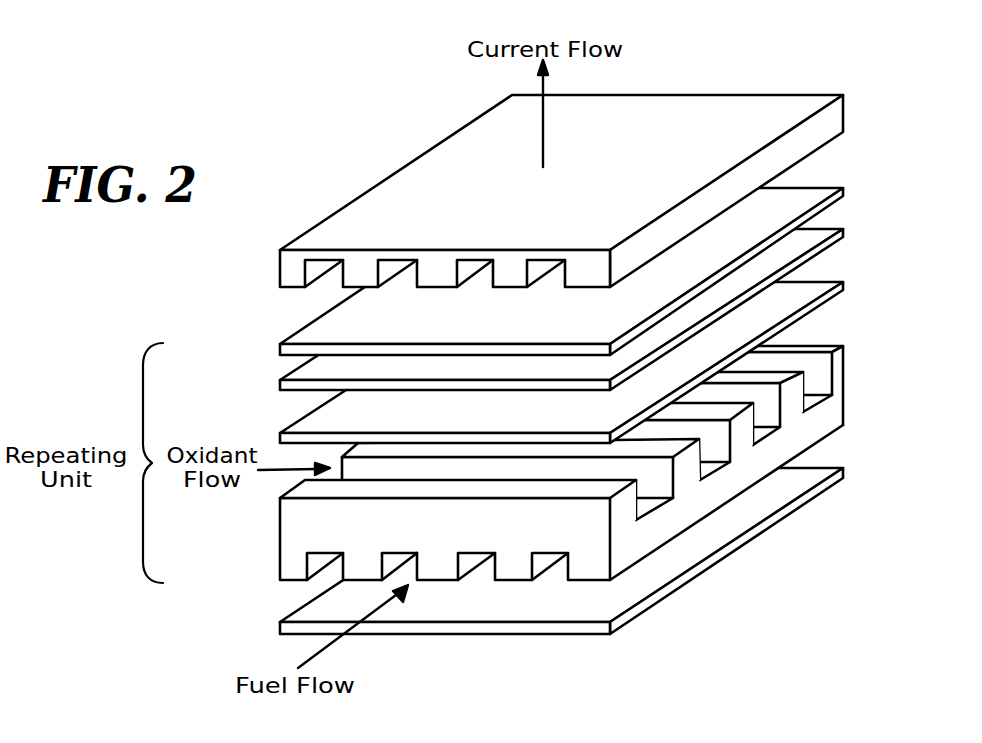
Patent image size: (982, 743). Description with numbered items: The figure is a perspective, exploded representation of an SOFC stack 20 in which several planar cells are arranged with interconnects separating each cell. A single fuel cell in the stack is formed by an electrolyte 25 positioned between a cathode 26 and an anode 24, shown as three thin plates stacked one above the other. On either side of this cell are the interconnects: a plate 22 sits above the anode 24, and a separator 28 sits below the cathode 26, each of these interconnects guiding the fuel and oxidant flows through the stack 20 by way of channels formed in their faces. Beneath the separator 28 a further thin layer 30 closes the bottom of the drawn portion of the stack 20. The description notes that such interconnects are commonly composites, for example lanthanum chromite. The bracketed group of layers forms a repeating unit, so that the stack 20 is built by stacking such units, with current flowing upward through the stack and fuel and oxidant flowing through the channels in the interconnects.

The SOFC stack 20 is at (596, 334).
The plate 22 is at (845, 115).
The anode 24 is at (845, 192).
The electrolyte 25 is at (845, 232).
The cathode 26 is at (845, 283).
The separator 28 is at (845, 383).
The separator plate 30 is at (845, 477).